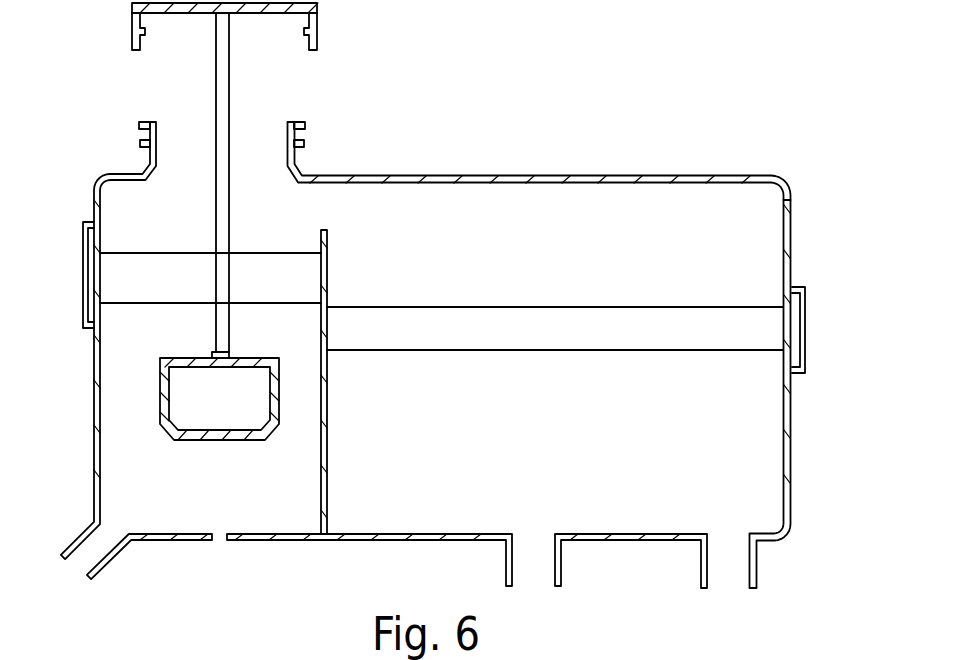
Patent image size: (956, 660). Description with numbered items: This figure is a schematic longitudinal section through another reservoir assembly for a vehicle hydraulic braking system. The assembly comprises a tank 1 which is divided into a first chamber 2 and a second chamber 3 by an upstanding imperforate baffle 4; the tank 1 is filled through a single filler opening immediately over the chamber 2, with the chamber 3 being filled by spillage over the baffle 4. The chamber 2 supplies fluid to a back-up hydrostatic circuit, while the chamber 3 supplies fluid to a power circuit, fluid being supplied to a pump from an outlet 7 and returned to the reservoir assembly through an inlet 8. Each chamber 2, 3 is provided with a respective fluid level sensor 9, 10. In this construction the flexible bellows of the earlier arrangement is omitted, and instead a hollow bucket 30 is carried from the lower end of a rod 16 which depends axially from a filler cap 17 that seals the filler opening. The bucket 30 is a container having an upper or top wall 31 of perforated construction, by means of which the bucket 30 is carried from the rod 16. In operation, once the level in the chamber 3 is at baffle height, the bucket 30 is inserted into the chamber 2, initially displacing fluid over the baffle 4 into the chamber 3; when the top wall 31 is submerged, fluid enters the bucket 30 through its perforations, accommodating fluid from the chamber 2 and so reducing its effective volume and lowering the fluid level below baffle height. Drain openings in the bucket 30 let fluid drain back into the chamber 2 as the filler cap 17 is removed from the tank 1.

The tank 1 is at (603, 177).
The first chamber 2 is at (113, 477).
The second chamber 3 is at (737, 447).
The upstanding imperforate baffle 4 is at (333, 486).
The outlet 7 is at (530, 563).
The inlet 8 is at (730, 552).
The fluid level sensor 9 is at (92, 255).
The fluid level sensor 10 is at (798, 303).
The rod 16 is at (216, 210).
The filler cap 17 is at (318, 20).
The hollow bucket 30 is at (163, 404).
The top wall 31 is at (207, 362).